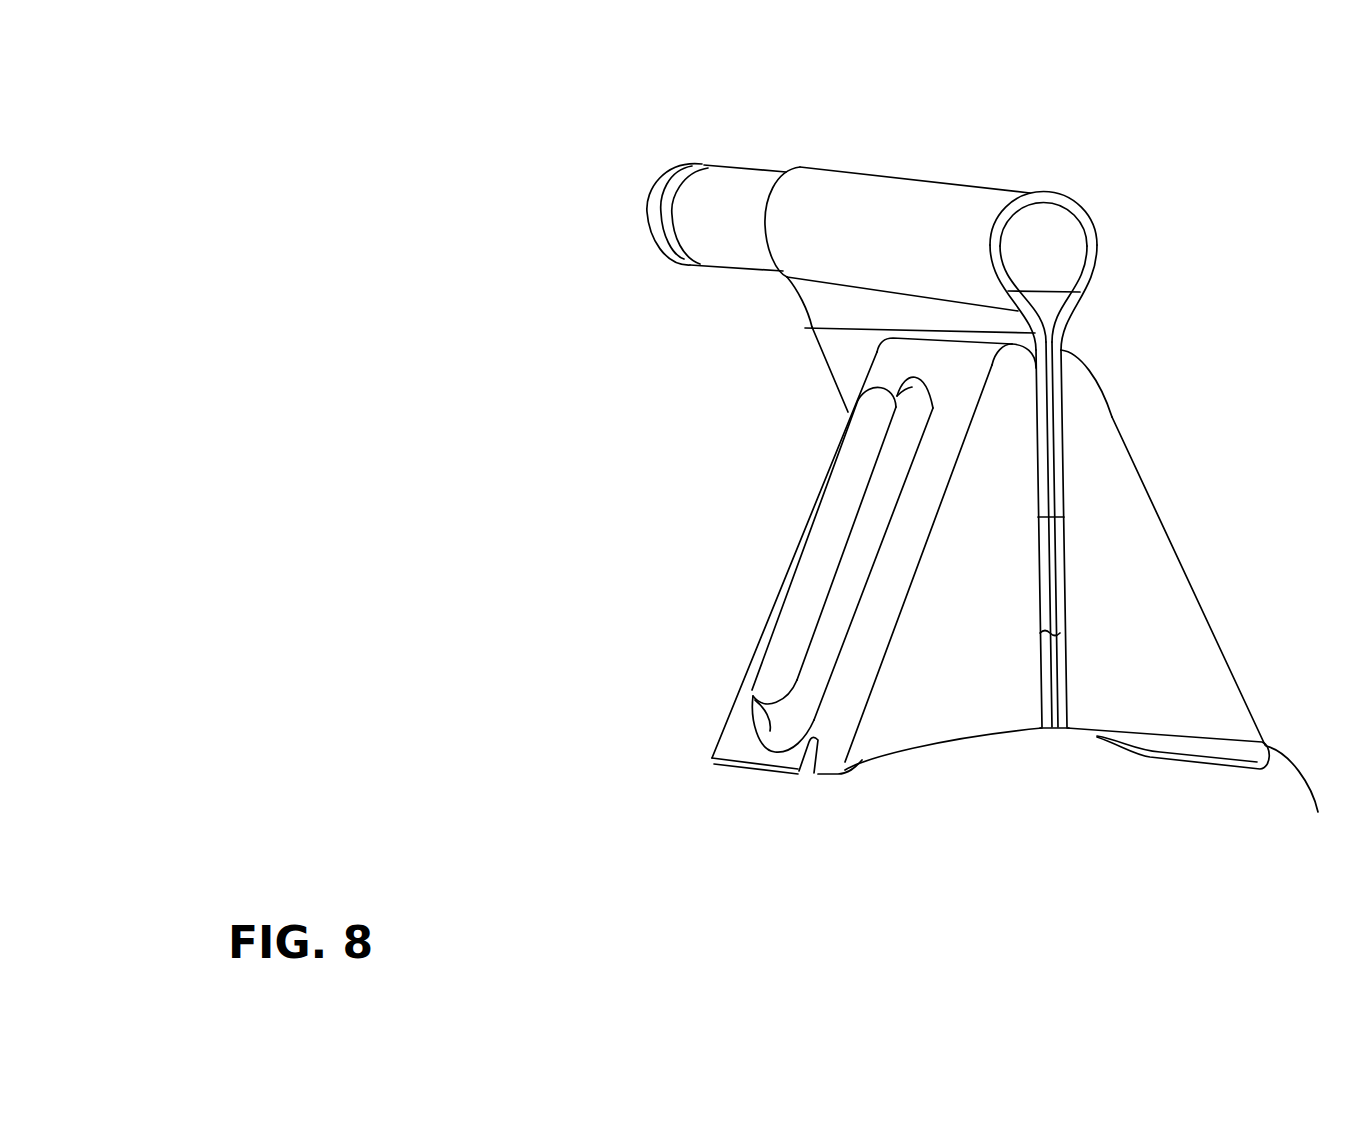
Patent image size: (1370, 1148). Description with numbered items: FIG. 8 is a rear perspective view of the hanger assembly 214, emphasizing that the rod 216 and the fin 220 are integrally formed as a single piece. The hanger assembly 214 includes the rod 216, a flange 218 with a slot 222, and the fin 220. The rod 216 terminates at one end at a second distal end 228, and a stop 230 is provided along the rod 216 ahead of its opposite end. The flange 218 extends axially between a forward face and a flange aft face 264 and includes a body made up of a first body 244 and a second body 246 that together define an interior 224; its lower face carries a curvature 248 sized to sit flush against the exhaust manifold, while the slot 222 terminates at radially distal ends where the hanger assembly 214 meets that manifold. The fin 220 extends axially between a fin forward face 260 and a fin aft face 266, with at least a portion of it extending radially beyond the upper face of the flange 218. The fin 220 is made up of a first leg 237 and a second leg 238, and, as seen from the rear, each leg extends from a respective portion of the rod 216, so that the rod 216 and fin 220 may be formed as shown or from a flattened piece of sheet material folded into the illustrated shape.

The hanger assembly 214 is at (377, 72).
The rod 216 is at (962, 183).
The flange 218 is at (740, 644).
The fin 220 is at (792, 309).
The slot 222 is at (1067, 565).
The interior 224 is at (1055, 729).
The second distal end 228 is at (1099, 241).
The stop 230 is at (797, 172).
The first leg 237 is at (805, 328).
The second leg 238 is at (1059, 342).
The first body 244 is at (790, 553).
The second body 246 is at (1132, 458).
The curvature 248 is at (930, 743).
The fin forward face 260 is at (833, 386).
The flange aft face 264 is at (1302, 793).
The fin aft face 266 is at (1050, 398).